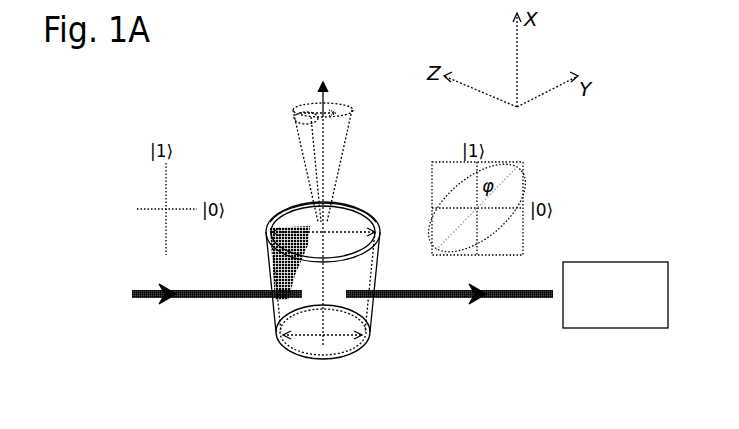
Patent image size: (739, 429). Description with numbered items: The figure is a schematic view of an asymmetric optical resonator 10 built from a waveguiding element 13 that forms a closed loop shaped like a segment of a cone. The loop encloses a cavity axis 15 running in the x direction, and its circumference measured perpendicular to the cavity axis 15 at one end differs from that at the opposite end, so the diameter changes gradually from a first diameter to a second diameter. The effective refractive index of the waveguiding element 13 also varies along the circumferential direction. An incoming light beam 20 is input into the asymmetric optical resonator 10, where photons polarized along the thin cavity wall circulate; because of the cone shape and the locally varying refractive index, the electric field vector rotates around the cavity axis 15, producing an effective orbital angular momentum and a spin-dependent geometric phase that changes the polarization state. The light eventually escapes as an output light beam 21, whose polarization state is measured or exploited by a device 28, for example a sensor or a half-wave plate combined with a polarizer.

The asymmetric optical resonator 10 is at (295, 358).
The waveguiding element 13 is at (370, 207).
The cavity axis 15 is at (348, 120).
The incoming light beam 20 is at (153, 298).
The output light beam 21 is at (404, 298).
The device for measuring or evaluating the polarization state 28 is at (668, 290).